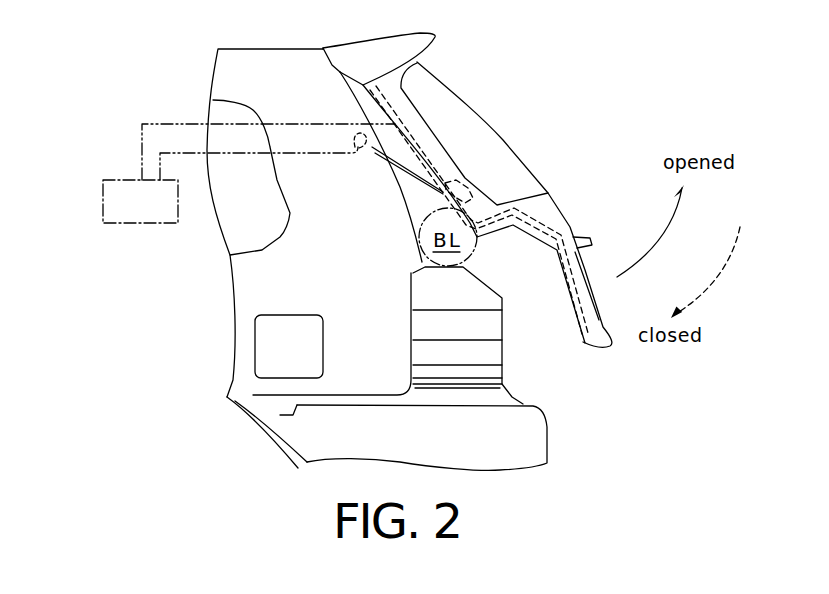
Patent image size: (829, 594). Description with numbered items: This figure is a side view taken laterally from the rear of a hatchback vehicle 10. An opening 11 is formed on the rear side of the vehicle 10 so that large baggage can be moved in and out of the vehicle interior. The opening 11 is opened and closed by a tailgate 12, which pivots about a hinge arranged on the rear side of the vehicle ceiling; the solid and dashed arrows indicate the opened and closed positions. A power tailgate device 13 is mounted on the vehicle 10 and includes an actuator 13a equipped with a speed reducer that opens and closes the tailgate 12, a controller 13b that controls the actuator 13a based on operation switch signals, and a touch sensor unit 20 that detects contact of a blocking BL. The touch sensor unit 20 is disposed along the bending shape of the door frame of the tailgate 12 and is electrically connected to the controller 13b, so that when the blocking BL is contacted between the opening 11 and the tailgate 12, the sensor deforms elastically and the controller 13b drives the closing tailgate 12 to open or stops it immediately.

The vehicle 10 is at (321, 250).
The opening 11 is at (556, 369).
The tailgate 12 is at (552, 218).
The power tailgate device 13 is at (133, 144).
The actuator 13a is at (410, 171).
The controller 13b is at (142, 223).
The touch sensor unit 20 is at (428, 128).